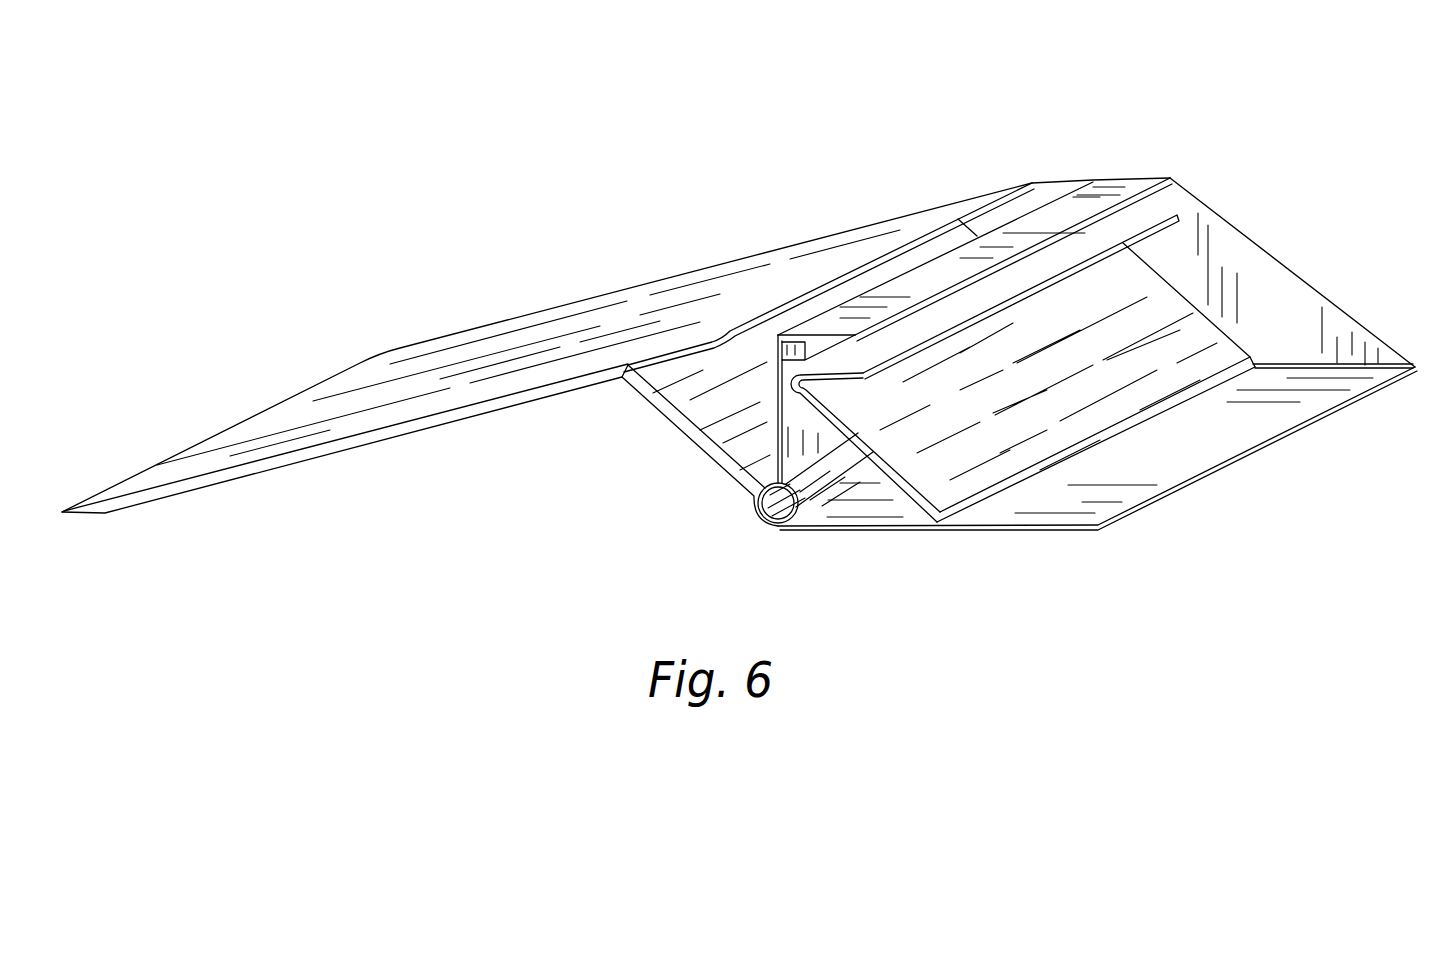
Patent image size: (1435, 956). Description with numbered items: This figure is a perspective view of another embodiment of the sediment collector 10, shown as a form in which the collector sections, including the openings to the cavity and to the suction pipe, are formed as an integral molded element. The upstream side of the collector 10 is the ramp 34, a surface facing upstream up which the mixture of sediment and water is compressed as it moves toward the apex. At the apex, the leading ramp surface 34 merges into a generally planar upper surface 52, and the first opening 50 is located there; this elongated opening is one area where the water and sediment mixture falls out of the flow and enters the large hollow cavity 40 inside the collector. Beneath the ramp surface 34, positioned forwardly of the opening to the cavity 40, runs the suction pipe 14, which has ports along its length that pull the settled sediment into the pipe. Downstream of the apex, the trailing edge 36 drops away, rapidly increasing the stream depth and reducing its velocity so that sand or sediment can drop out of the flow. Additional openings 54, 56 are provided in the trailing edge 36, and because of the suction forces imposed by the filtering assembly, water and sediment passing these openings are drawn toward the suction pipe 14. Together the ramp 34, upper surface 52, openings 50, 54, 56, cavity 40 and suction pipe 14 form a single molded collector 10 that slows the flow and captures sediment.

The collector 10 is at (920, 150).
The suction pipe 14 is at (778, 508).
The ramp 34 is at (630, 317).
The trailing edge 36 is at (1312, 280).
The hollow cavity 40 is at (742, 400).
The first opening 50 is at (1053, 187).
The upper surface 52 is at (1127, 183).
The additional opening 54 is at (1007, 282).
The additional opening 56 is at (1093, 440).